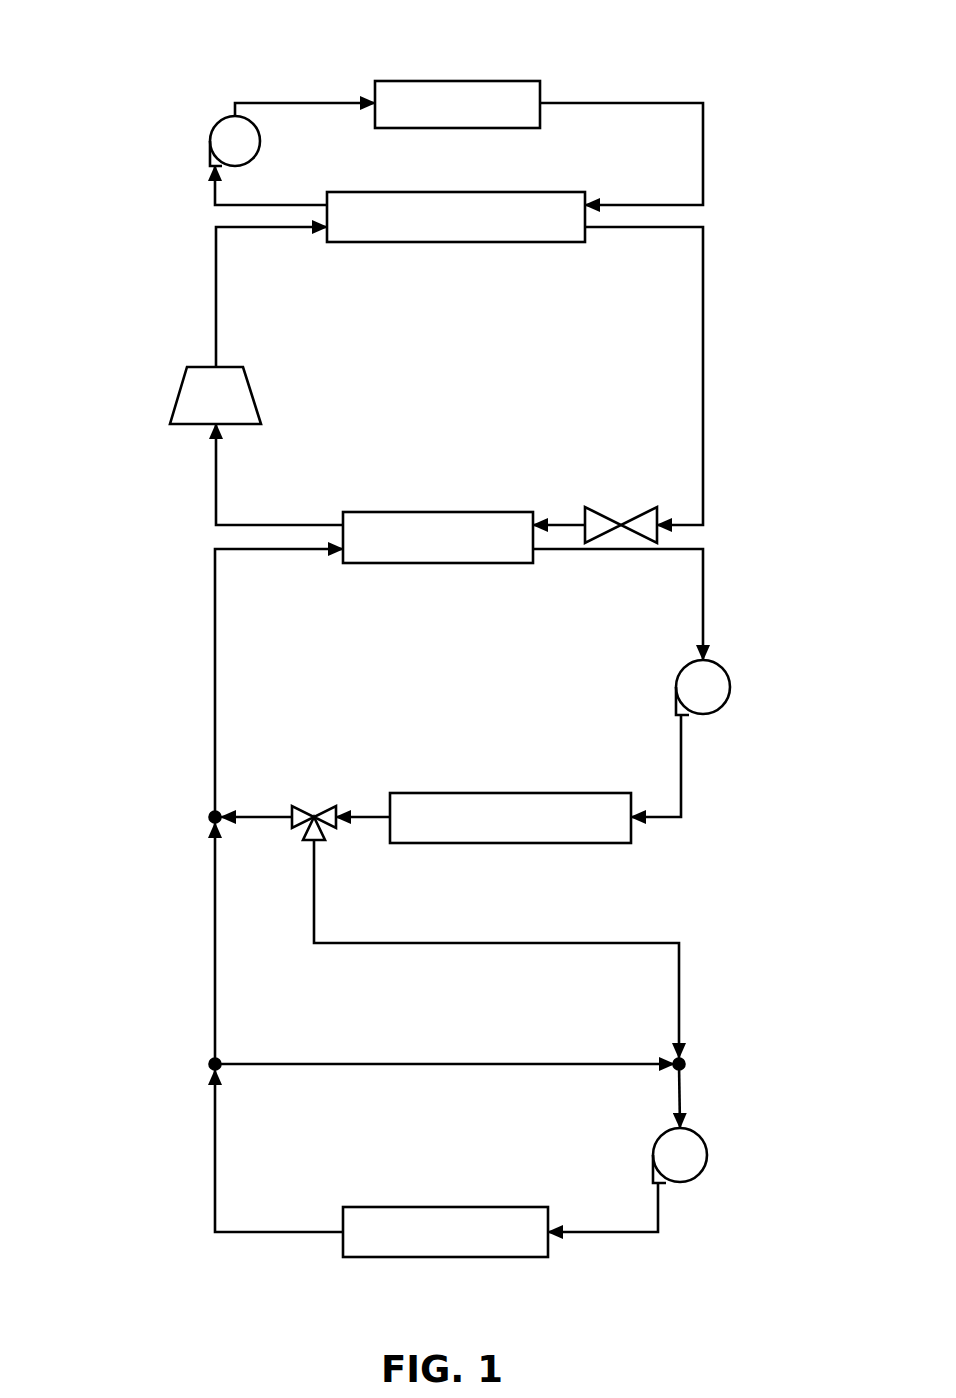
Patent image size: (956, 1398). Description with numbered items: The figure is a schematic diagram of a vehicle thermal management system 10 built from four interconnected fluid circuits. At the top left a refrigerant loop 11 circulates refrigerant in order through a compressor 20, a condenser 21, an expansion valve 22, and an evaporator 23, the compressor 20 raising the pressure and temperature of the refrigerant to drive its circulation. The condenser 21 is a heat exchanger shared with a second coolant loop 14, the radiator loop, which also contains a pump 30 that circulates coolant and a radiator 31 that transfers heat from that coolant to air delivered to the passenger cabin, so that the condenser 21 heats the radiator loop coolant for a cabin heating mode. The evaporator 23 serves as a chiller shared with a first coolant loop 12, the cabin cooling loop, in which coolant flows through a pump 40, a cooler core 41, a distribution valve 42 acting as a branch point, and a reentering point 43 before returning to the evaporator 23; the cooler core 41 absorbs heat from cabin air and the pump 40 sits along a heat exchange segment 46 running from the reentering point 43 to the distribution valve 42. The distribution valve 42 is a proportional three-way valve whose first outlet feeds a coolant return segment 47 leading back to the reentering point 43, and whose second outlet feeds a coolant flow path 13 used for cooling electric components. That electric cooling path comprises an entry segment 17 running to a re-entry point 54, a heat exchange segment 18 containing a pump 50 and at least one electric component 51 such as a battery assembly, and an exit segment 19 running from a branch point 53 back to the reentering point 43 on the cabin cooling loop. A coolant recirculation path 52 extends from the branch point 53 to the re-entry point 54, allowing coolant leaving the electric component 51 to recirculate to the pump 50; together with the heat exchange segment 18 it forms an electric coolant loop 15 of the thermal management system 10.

The thermal management system 10 is at (148, 78).
The refrigerant loop 11 is at (716, 390).
The first coolant loop 12 is at (716, 552).
The coolant flow path 13 is at (688, 932).
The second coolant loop 14 is at (720, 152).
The electric coolant loop 15 is at (202, 1156).
The entry segment 17 is at (515, 950).
The heat exchange segment 18 is at (267, 1237).
The exit segment 19 is at (205, 900).
The compressor 20 is at (182, 382).
The condenser 21 is at (455, 242).
The expansion valve 22 is at (621, 525).
The evaporator 23 is at (442, 512).
The pump 30 is at (210, 138).
The radiator 31 is at (455, 81).
The pump 40 is at (730, 687).
The cooler core 41 is at (508, 843).
The distribution valve 42 is at (314, 817).
The reentering point 43 is at (219, 813).
The heat exchange segment 46 is at (688, 604).
The coolant return segment 47 is at (260, 823).
The pump 50 is at (707, 1155).
The electric component 51 is at (433, 1207).
The coolant recirculation path 52 is at (322, 1063).
The branch point 53 is at (211, 1060).
The re-entry point 54 is at (684, 1059).